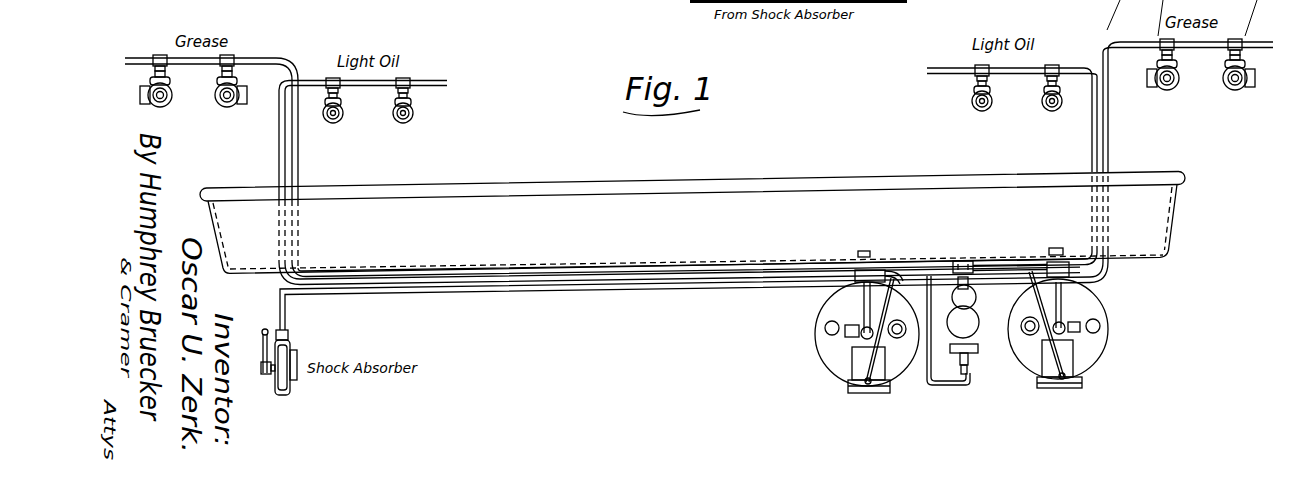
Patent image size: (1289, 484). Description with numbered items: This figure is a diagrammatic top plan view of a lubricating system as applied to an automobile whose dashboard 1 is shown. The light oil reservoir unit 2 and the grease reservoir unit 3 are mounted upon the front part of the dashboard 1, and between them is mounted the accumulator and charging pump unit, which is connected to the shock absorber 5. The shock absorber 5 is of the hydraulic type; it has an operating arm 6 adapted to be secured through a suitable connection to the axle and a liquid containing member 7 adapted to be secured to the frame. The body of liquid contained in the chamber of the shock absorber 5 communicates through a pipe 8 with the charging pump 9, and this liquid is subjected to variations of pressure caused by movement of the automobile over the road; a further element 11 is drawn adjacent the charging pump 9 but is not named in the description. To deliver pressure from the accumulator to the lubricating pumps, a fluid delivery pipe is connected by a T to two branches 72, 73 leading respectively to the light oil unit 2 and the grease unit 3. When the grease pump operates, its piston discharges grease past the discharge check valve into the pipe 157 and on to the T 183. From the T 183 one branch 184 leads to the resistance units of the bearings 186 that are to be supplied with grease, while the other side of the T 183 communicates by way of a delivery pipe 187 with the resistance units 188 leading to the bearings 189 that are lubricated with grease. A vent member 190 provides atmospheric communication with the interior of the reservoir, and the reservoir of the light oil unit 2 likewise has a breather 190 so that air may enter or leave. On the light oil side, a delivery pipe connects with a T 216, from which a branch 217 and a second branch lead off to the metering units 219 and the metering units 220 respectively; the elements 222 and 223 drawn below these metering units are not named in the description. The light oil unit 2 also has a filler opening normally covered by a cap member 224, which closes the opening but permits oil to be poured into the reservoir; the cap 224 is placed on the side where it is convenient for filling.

The dashboard 1 is at (726, 208).
The light oil reservoir unit 2 is at (812, 353).
The grease reservoir unit 3 is at (1122, 345).
The shock absorber 5 is at (298, 393).
The operating arm 6 is at (262, 343).
The liquid containing member 7 is at (288, 350).
The pipe 8 is at (606, 294).
The charging pump 9 is at (967, 360).
The valve 11 is at (983, 330).
The branch 72 is at (925, 262).
The branch 73 is at (999, 264).
The pipe 157 is at (1063, 294).
The T 183 is at (1053, 258).
The branch 184 is at (1093, 160).
The bearings 186 is at (1163, 92).
The delivery pipe 187 is at (297, 165).
The resistance unit 188 is at (161, 56).
The bearings 189 is at (167, 110).
The vent member 190 is at (825, 328).
The T 216 is at (874, 270).
The branch 217 is at (527, 281).
The metering units 219 is at (330, 75).
The metering units 220 is at (977, 66).
The light oil nipples 222 is at (340, 120).
The light oil nipples 223 is at (973, 107).
The cap member 224 is at (900, 338).